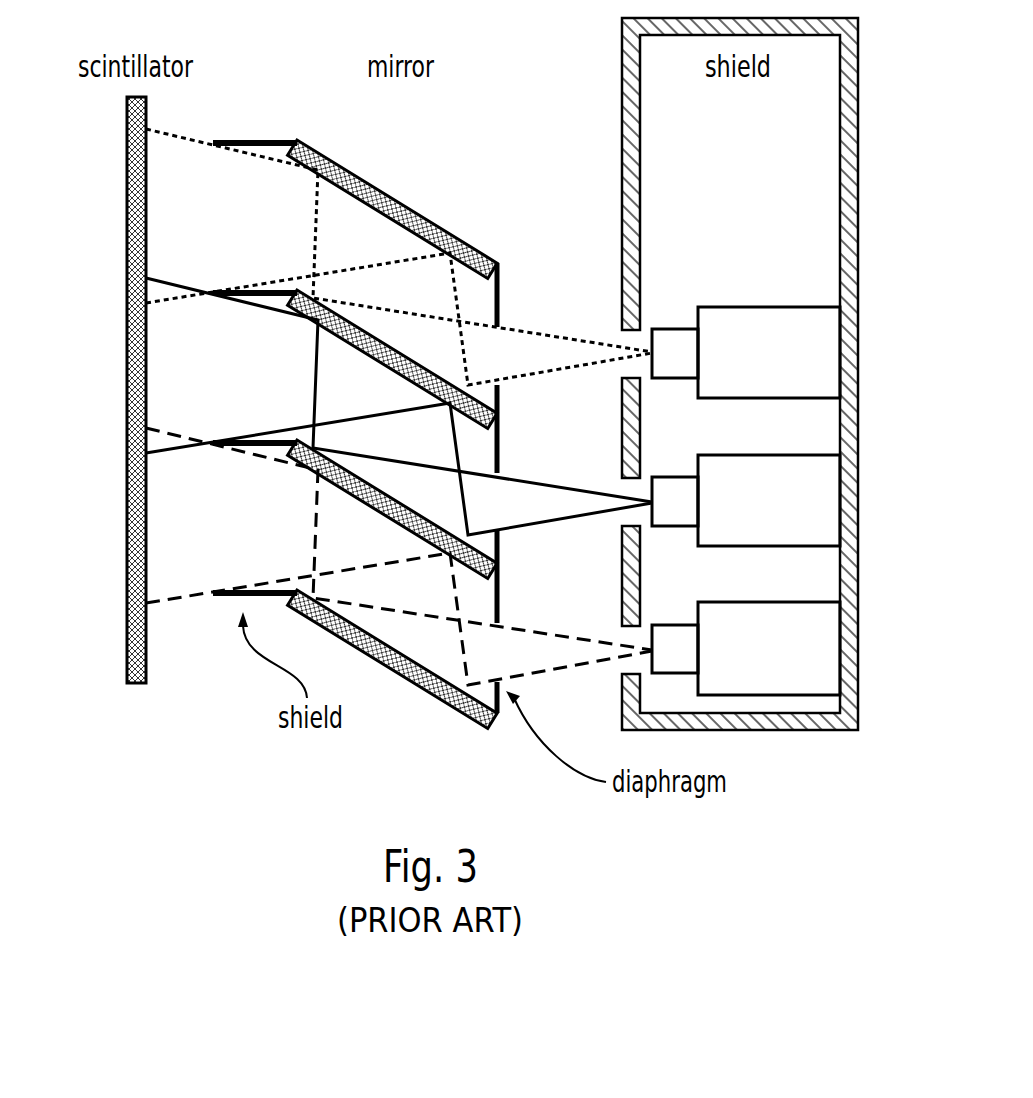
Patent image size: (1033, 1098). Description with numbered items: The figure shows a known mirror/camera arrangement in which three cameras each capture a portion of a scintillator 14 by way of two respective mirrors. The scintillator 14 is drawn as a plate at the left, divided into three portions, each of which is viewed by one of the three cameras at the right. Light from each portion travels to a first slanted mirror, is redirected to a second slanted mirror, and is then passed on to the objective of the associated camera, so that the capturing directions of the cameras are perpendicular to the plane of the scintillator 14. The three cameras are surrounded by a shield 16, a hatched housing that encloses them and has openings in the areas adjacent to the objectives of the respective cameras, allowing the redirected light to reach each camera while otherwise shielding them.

The scintillator 14 is at (75, 390).
The shield 16 is at (622, 70).